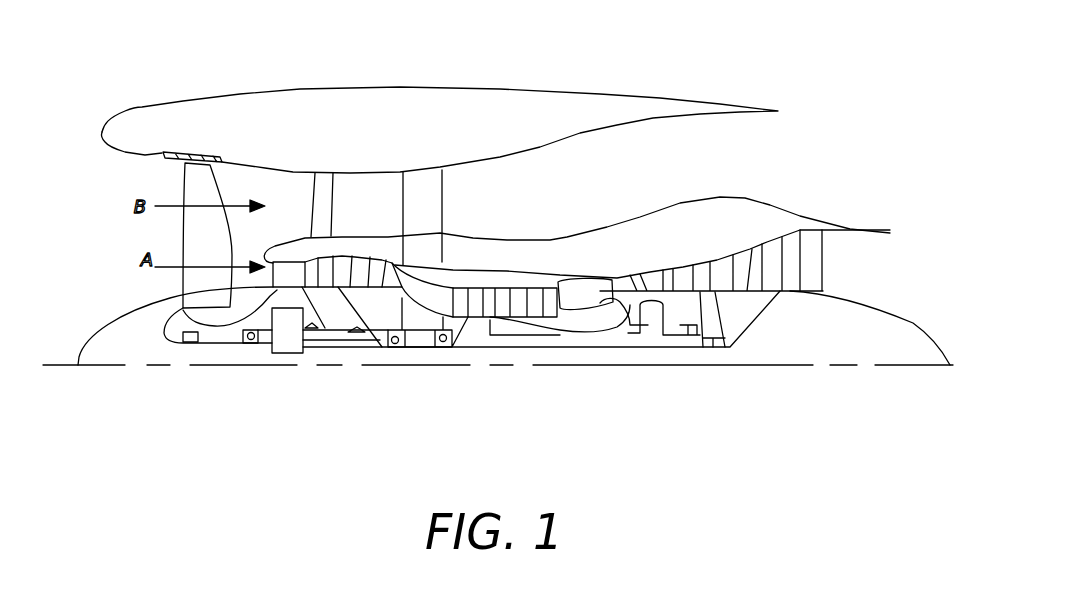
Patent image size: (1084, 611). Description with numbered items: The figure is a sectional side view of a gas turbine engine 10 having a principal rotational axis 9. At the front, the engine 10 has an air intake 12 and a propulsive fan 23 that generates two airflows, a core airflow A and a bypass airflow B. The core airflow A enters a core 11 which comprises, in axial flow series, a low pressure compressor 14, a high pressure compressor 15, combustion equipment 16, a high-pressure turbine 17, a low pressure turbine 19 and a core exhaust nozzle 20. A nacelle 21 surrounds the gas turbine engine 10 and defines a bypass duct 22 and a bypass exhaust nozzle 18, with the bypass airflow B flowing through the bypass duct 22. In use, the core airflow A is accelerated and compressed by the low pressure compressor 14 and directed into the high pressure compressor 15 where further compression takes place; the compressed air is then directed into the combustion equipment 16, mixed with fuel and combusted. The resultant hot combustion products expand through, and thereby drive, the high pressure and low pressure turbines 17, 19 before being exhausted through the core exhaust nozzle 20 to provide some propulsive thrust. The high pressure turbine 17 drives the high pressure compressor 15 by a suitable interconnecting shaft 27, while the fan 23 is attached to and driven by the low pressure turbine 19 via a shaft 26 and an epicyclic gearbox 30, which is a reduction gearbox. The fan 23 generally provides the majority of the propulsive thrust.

The principal rotational axis 9 is at (827, 367).
The gas turbine engine 10 is at (175, 103).
The core 11 is at (554, 272).
The air intake 12 is at (127, 173).
The low pressure compressor 14 is at (357, 263).
The high pressure compressor 15 is at (510, 297).
The combustion equipment 16 is at (585, 297).
The high-pressure turbine 17 is at (647, 280).
The bypass exhaust nozzle 18 is at (762, 146).
The low pressure turbine 19 is at (792, 245).
The core exhaust nozzle 20 is at (848, 265).
The nacelle 21 is at (418, 100).
The bypass duct 22 is at (694, 167).
The propulsive fan 23 is at (185, 237).
The shaft 26 is at (503, 350).
The interconnecting shaft 27 is at (545, 340).
The epicyclic gearbox 30 is at (283, 345).